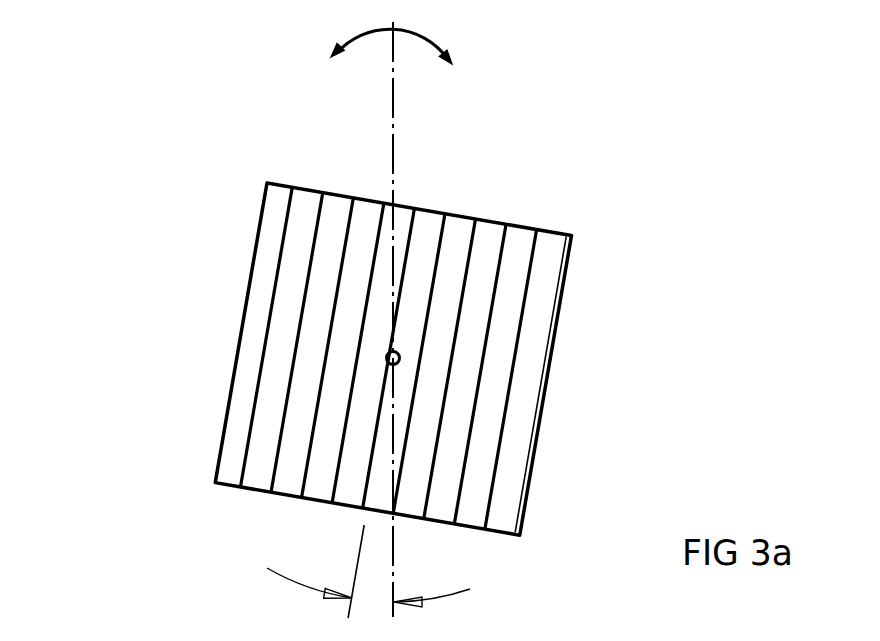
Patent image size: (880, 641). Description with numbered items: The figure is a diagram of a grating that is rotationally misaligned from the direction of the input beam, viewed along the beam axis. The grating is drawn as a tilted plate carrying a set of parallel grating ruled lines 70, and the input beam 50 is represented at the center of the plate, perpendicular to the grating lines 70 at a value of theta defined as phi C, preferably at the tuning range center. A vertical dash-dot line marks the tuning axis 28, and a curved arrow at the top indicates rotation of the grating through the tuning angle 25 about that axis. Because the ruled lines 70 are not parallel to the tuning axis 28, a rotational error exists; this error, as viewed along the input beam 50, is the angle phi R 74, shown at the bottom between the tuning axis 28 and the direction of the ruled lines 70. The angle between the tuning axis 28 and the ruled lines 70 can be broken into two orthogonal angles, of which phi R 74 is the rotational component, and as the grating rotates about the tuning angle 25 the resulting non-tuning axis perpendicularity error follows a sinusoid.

The tuning angle 25 is at (437, 47).
The tuning axis 28 is at (393, 160).
The input beam 50 is at (398, 352).
The grating ruled lines 70 is at (348, 228).
The rotational error angle φR 74 is at (227, 542).